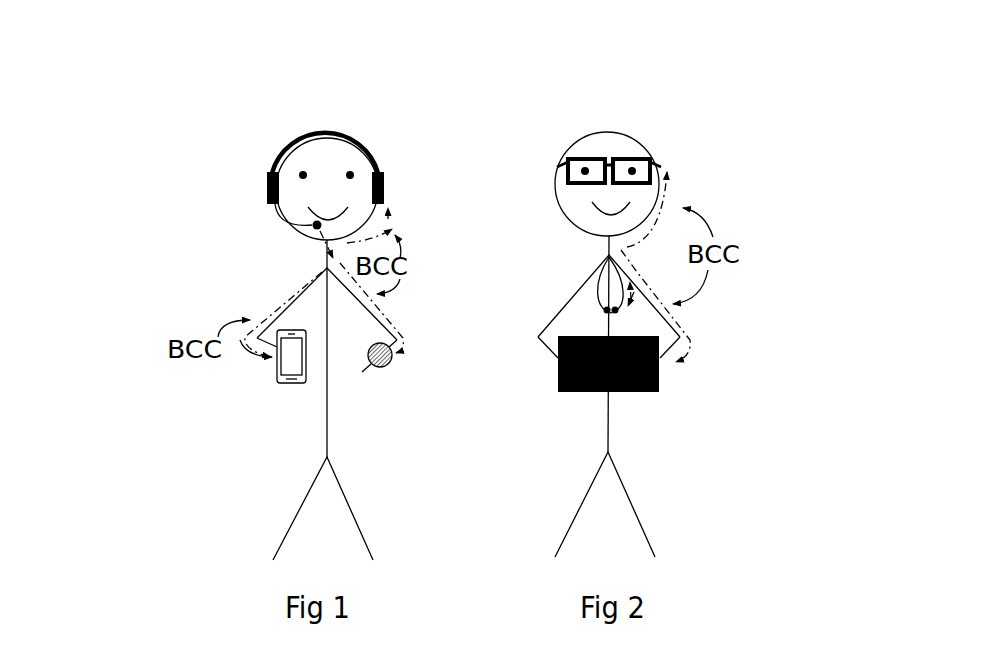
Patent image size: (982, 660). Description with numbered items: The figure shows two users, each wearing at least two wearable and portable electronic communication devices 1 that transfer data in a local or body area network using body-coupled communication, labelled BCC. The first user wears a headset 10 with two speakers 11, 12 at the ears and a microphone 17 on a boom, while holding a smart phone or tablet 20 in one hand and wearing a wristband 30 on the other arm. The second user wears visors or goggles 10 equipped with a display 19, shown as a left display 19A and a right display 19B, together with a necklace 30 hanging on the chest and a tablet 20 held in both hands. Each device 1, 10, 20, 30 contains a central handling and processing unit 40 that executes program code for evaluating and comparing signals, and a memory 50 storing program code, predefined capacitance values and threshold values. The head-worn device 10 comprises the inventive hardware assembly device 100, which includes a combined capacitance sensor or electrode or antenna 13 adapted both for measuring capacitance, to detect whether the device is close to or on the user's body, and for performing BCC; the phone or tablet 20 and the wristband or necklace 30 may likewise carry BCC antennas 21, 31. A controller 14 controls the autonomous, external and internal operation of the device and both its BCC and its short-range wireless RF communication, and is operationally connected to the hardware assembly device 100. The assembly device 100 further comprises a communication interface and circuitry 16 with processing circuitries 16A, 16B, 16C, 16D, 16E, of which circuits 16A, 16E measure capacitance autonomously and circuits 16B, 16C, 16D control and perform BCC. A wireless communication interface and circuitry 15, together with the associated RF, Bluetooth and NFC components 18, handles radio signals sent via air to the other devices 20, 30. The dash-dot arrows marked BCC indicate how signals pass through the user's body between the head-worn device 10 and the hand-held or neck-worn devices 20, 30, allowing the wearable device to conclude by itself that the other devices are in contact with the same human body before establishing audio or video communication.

In FIG. 1, the wearable and portable electronic communication device 1 is at (244, 157).
In FIG. 2, the wearable and portable electronic communication device 1 is at (694, 100).
In FIG. 1, the headset or visors 10 is at (244, 157).
In FIG. 2, the headset or visors 10 is at (694, 100).
In FIG. 1, the speaker 11 is at (259, 195).
In FIG. 1, the speaker 12 is at (390, 193).
In FIG. 1, the combined capacitance sensor or electrode or antenna 13 is at (244, 157).
In FIG. 2, the combined capacitance sensor or electrode or antenna 13 is at (694, 100).
In FIG. 1, the controller 14 is at (244, 157).
In FIG. 2, the controller 14 is at (694, 100).
In FIG. 1, the wireless communication interface and circuitry 15 is at (244, 157).
In FIG. 2, the wireless communication interface and circuitry 15 is at (694, 100).
In FIG. 1, the communication interface and circuitry 16 is at (244, 157).
In FIG. 2, the communication interface and circuitry 16 is at (694, 100).
In FIG. 1, the processing circuitry 16A is at (244, 157).
In FIG. 2, the processing circuitry 16A is at (694, 100).
In FIG. 1, the processing circuitry 16B is at (244, 157).
In FIG. 2, the processing circuitry 16B is at (694, 100).
In FIG. 1, the processing circuitry 16C is at (244, 157).
In FIG. 2, the processing circuitry 16C is at (694, 100).
In FIG. 1, the processing circuitry 16D is at (244, 157).
In FIG. 2, the processing circuitry 16D is at (694, 100).
In FIG. 1, the processing circuitry 16E is at (244, 157).
In FIG. 2, the processing circuitry 16E is at (694, 100).
In FIG. 1, the microphone 17 is at (307, 233).
In FIG. 1, the equipment and components for RF, BT and NFC communication 18 is at (244, 157).
In FIG. 2, the equipment and components for RF, BT and NFC communication 18 is at (694, 100).
In FIG. 2, the display 19 is at (694, 100).
In FIG. 2, the display 19A is at (566, 157).
In FIG. 2, the display 19B is at (652, 158).
In FIG. 1, the smart phone or tablet 20 is at (185, 403).
In FIG. 2, the smart phone or tablet 20 is at (701, 400).
In FIG. 1, the antenna 21 is at (284, 403).
In FIG. 2, the antenna 21 is at (638, 402).
In FIG. 1, the wristband or necklace 30 is at (446, 437).
In FIG. 2, the wristband or necklace 30 is at (544, 277).
In FIG. 1, the antenna 31 is at (383, 383).
In FIG. 2, the antenna 31 is at (590, 271).
In FIG. 1, the central handling and processing unit 40 is at (244, 157).
In FIG. 2, the central handling and processing unit 40 is at (694, 100).
In FIG. 1, the memory 50 is at (244, 157).
In FIG. 2, the memory 50 is at (694, 100).
In FIG. 1, the hardware assembly device 100 is at (244, 157).
In FIG. 2, the hardware assembly device 100 is at (694, 100).